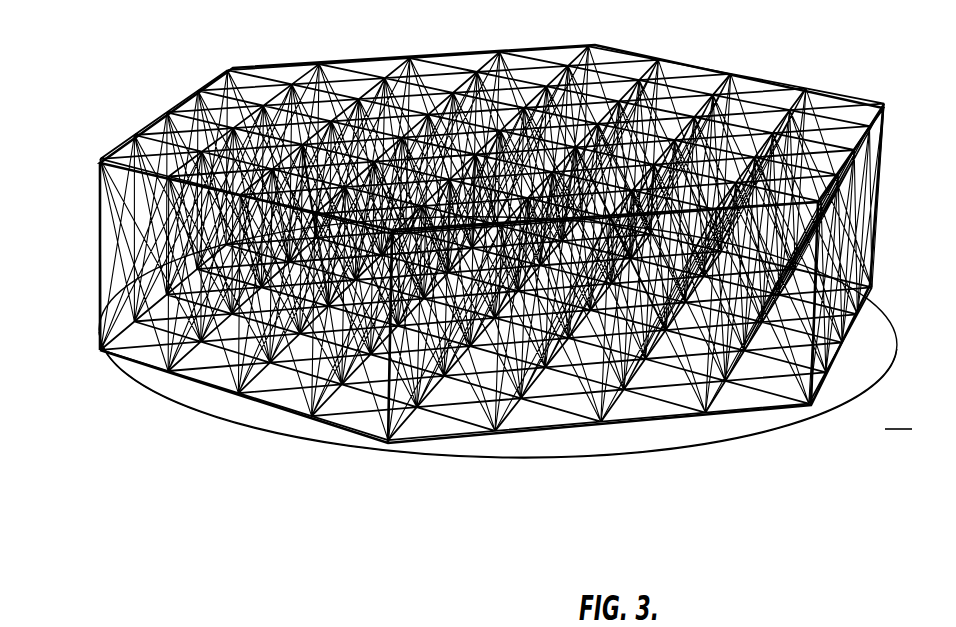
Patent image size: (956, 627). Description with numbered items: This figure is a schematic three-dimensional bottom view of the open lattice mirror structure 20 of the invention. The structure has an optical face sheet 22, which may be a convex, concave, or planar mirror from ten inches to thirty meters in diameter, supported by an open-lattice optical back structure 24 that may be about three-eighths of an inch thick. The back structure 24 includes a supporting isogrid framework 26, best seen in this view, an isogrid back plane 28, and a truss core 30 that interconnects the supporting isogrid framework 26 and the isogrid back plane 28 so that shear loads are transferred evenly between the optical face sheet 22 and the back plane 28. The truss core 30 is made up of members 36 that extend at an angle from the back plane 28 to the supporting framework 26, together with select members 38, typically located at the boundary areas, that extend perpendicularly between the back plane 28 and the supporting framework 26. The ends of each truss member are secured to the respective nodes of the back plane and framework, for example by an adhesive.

The open lattice mirror structure 20 is at (898, 415).
The optical face sheet 22 is at (320, 444).
The optical back structure 24 is at (475, 309).
The supporting isogrid framework 26 is at (192, 377).
The isogrid back plane 28 is at (173, 73).
The truss core 30 is at (897, 143).
The angled truss members 36 is at (772, 305).
The perpendicular truss members 38 is at (587, 363).